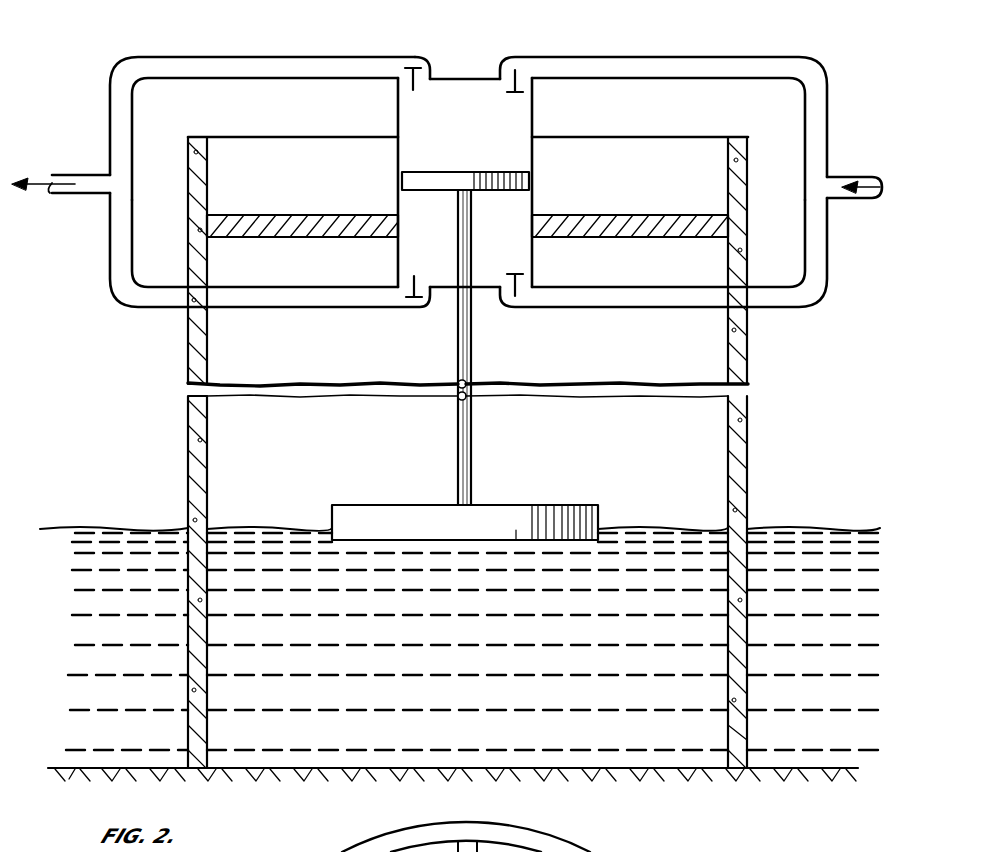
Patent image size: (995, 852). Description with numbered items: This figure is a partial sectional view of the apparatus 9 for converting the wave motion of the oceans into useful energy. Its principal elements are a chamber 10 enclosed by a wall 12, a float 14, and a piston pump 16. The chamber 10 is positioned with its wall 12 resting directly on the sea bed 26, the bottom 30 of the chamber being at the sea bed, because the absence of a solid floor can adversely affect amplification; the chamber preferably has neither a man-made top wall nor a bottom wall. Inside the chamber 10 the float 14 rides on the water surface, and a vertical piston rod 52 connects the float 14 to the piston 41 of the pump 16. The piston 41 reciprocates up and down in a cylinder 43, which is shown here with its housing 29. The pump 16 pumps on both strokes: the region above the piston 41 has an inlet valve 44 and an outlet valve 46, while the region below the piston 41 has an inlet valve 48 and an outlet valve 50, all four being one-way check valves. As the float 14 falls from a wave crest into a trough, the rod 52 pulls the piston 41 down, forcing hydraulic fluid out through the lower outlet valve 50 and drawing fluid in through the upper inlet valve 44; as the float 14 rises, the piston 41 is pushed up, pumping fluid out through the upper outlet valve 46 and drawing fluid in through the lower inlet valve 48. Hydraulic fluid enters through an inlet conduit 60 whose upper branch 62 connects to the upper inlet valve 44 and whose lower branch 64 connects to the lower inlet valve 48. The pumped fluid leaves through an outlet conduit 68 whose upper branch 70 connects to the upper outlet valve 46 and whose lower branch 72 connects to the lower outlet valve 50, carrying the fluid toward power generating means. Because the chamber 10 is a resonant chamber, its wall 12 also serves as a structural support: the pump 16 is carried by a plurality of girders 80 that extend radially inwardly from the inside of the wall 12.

The apparatus 9 is at (412, 46).
The chamber 10 is at (320, 462).
The wall 12 is at (750, 453).
The float 14 is at (392, 505).
The piston pump 16 is at (540, 113).
The sea bed 26 is at (488, 803).
The cylinder housing 29 is at (698, 137).
The bottom of the chamber 30 is at (718, 770).
The piston 41 is at (465, 172).
The cylinder 43 is at (535, 159).
The upper inlet valve 44 is at (498, 84).
The upper outlet valve 46 is at (432, 68).
The lower inlet valve 48 is at (512, 300).
The lower outlet valve 50 is at (412, 300).
The piston rod 52 is at (474, 436).
The inlet conduit 60 is at (872, 198).
The upper branch of inlet conduit 62 is at (702, 57).
The lower branch of inlet conduit 64 is at (662, 307).
The outlet conduit 68 is at (70, 195).
The upper branch of outlet conduit 70 is at (262, 57).
The lower branch of outlet conduit 72 is at (262, 307).
The girders 80 is at (290, 215).